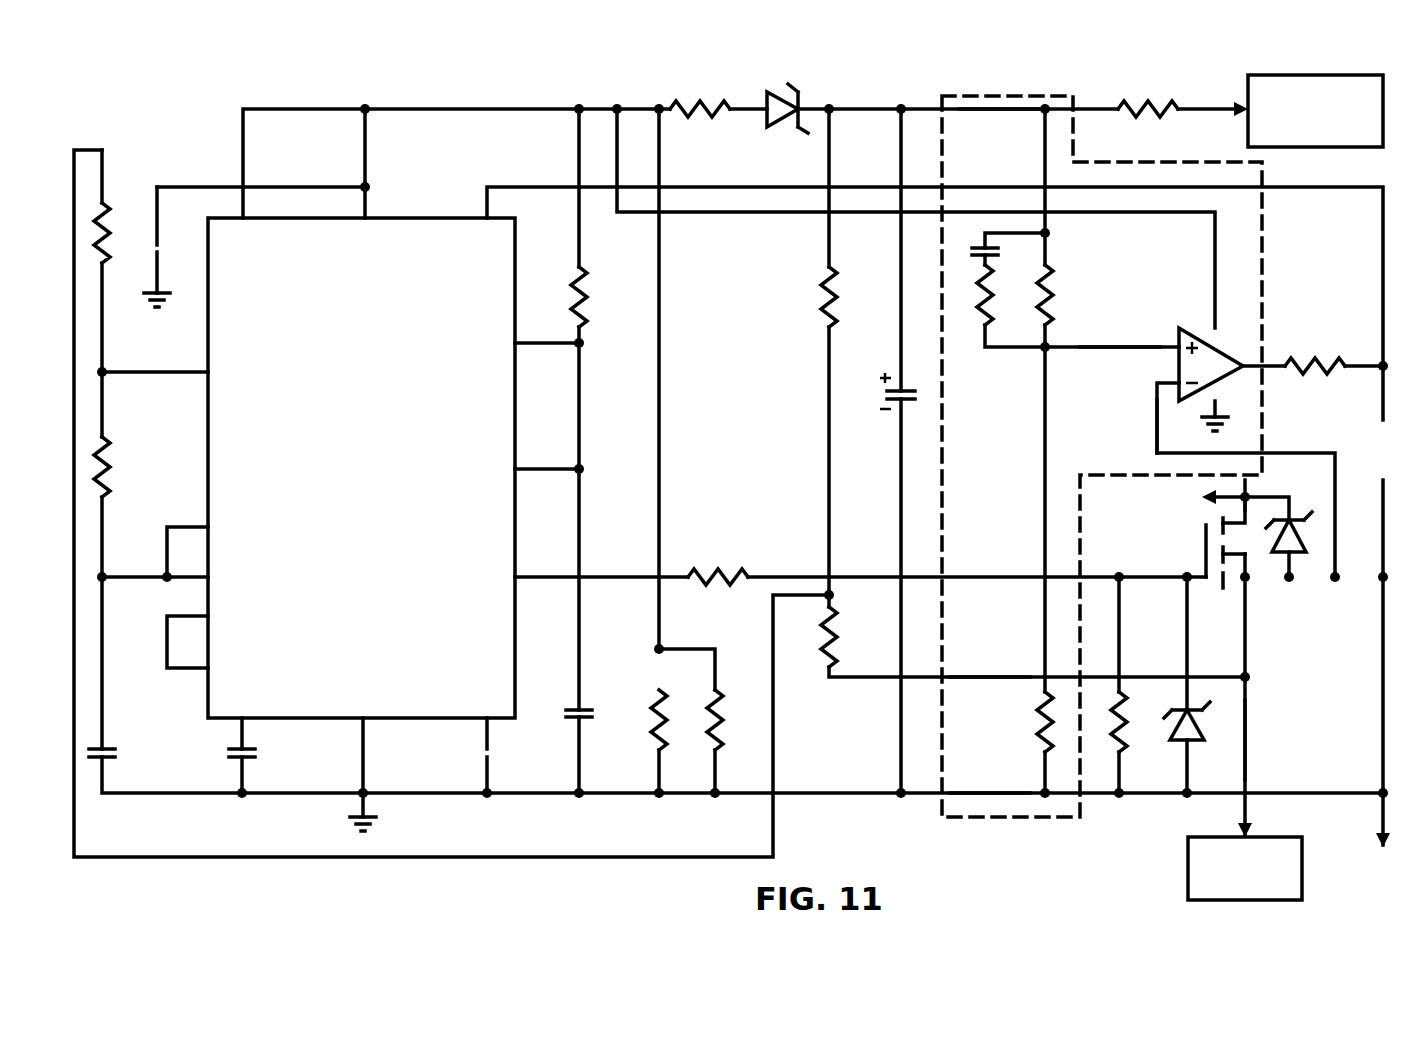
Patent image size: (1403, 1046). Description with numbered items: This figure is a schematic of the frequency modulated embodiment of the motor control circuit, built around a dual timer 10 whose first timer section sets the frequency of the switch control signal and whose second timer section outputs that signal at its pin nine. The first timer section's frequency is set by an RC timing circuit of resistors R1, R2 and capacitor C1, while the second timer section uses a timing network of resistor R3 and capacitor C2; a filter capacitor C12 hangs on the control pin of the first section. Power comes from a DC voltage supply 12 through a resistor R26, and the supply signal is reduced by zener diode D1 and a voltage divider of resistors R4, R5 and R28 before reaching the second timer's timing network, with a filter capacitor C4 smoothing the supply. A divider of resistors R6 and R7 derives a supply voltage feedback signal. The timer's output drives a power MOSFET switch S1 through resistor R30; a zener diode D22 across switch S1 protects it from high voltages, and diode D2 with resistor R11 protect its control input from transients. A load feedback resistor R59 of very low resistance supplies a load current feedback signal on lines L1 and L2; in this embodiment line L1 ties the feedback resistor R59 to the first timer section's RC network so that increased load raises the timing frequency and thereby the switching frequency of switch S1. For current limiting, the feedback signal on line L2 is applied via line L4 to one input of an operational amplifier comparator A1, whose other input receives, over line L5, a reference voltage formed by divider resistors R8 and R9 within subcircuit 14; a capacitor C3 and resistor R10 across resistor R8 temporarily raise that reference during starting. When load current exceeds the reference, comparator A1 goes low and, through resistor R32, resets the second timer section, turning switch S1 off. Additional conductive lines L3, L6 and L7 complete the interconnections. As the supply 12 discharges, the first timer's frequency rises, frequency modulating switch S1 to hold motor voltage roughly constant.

The timer 10 is at (341, 503).
The DC voltage supply 12 is at (1248, 78).
The subcircuit 14 is at (944, 96).
The resistor R1 is at (108, 222).
The resistor R2 is at (108, 464).
The resistor R3 is at (587, 297).
The resistor R4 is at (700, 104).
The resistor R5 is at (650, 700).
The resistor R6 is at (822, 300).
The resistor R7 is at (822, 640).
The resistor R8 is at (1052, 300).
The resistor R9 is at (1037, 730).
The resistor R10 is at (975, 302).
The resistor R11 is at (1126, 722).
The resistor R26 is at (1150, 105).
The resistor R28 is at (720, 708).
The resistor R30 is at (712, 568).
The resistor R32 is at (1316, 360).
The feedback resistor R59 is at (1188, 868).
The capacitor C1 is at (110, 750).
The capacitor C2 is at (572, 706).
The capacitor C3 is at (996, 255).
The filter capacitor C4 is at (905, 400).
The filter capacitor C12 is at (232, 752).
The zener diode D1 is at (772, 90).
The diode D2 is at (1200, 726).
The zener diode D22 is at (1294, 560).
The power semiconductor switch S1 is at (1204, 548).
The operational amplifier comparator A1 is at (1222, 345).
The line L1 is at (988, 677).
The line L2 is at (1246, 738).
The line L3 is at (1262, 497).
The line L4 is at (1157, 424).
The line L5 is at (1118, 345).
The line L6 is at (996, 108).
The line L7 is at (980, 814).